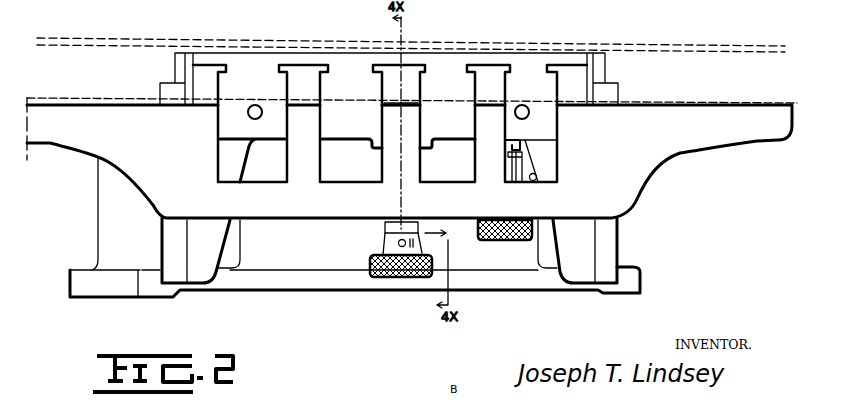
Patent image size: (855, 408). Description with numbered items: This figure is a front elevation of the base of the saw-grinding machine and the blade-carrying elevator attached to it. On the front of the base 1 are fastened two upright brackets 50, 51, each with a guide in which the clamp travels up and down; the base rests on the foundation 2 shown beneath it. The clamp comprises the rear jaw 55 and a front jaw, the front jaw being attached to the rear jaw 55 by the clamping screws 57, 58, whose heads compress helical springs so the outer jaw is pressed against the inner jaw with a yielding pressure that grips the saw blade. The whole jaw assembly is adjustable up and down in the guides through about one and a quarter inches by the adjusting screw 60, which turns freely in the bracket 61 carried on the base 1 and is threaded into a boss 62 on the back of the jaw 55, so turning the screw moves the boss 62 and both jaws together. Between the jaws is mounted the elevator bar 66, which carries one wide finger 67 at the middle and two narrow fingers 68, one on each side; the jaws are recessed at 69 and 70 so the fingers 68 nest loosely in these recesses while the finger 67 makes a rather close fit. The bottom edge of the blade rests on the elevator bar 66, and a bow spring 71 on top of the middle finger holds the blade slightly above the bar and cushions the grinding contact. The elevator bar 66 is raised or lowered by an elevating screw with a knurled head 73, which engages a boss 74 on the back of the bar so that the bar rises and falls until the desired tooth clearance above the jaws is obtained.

The base 1 is at (113, 224).
The base plate 2 is at (73, 271).
The upright bracket 50 is at (607, 240).
The upright bracket 51 is at (173, 242).
The rear jaw 55 is at (267, 62).
The clamping screw 57 is at (253, 105).
The clamping screw 58 is at (521, 105).
The adjusting screw 60 is at (502, 241).
The bracket 61 is at (510, 173).
The boss 62 is at (518, 142).
The elevator bar 66 is at (686, 145).
The wide finger 67 is at (388, 156).
The narrow finger 68 is at (300, 151).
The recess 69 is at (308, 72).
The recess 70 is at (410, 89).
The bow spring 71 is at (387, 87).
The knurled head 73 is at (375, 279).
The boss 74 is at (383, 224).